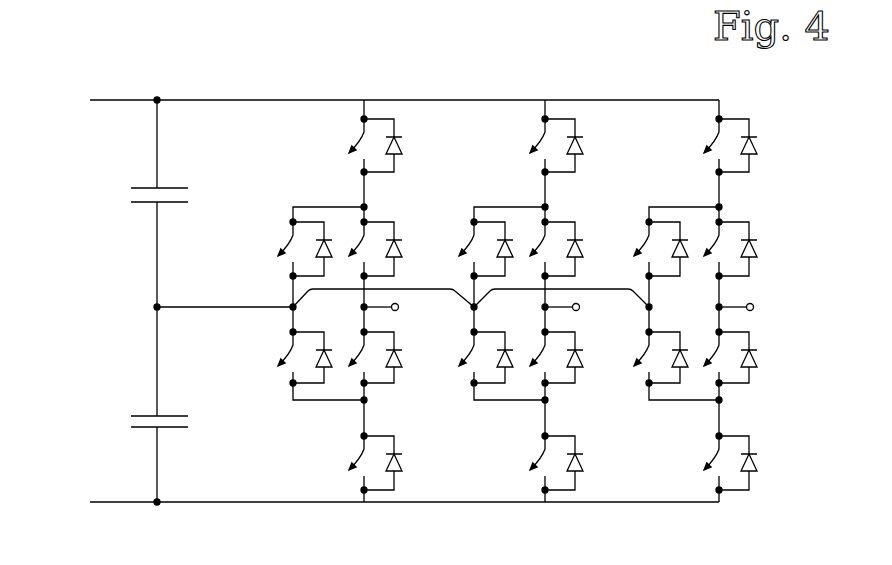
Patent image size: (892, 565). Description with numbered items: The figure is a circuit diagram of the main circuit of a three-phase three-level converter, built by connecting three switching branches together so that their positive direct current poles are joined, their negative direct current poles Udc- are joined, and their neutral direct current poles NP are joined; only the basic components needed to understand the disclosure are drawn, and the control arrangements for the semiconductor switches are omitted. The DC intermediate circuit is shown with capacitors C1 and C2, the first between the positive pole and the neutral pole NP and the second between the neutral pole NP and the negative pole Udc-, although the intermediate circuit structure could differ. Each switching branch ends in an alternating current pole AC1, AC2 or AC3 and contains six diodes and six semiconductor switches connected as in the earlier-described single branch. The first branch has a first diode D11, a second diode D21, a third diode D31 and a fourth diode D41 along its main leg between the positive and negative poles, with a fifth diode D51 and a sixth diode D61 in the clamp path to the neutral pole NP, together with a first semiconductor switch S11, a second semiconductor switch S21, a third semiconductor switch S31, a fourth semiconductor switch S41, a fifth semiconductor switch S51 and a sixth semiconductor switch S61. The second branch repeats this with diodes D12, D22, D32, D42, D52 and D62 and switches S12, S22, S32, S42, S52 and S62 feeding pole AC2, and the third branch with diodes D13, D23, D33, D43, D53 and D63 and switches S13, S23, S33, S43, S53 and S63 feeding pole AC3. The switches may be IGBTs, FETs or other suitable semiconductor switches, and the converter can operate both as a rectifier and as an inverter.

The first semiconductor switch S11 is at (348, 145).
The first diode D11 is at (398, 145).
The second semiconductor switch S21 is at (348, 251).
The second diode D21 is at (400, 249).
The third semiconductor switch S31 is at (348, 358).
The third diode D31 is at (400, 357).
The fourth semiconductor switch S41 is at (348, 463).
The fourth diode D41 is at (400, 463).
The fifth semiconductor switch S51 is at (277, 249).
The fifth diode D51 is at (325, 249).
The sixth semiconductor switch S61 is at (277, 357).
The sixth diode D61 is at (325, 357).
The alternating current pole AC1 is at (401, 306).
The first semiconductor switch S12 is at (529, 145).
The first diode D12 is at (579, 145).
The second semiconductor switch S22 is at (529, 251).
The second diode D22 is at (581, 249).
The third semiconductor switch S32 is at (529, 358).
The third diode D32 is at (581, 357).
The fourth semiconductor switch S42 is at (529, 463).
The fourth diode D42 is at (581, 463).
The fifth semiconductor switch S52 is at (458, 249).
The fifth diode D52 is at (506, 249).
The sixth semiconductor switch S62 is at (458, 357).
The sixth diode D62 is at (506, 357).
The alternating current pole AC2 is at (582, 306).
The first semiconductor switch S13 is at (703, 145).
The first diode D13 is at (753, 145).
The second semiconductor switch S23 is at (703, 251).
The second diode D23 is at (755, 249).
The third semiconductor switch S33 is at (703, 358).
The third diode D33 is at (755, 357).
The fourth semiconductor switch S43 is at (703, 463).
The fourth diode D43 is at (755, 463).
The fifth semiconductor switch S53 is at (633, 249).
The fifth diode D53 is at (681, 249).
The sixth semiconductor switch S63 is at (633, 357).
The sixth diode D63 is at (681, 357).
The alternating current pole AC3 is at (756, 306).
The capacitor C1 is at (143, 195).
The capacitor C2 is at (143, 421).
The neutral direct current pole NP is at (373, 303).
The negative direct current pole Udc- is at (404, 519).